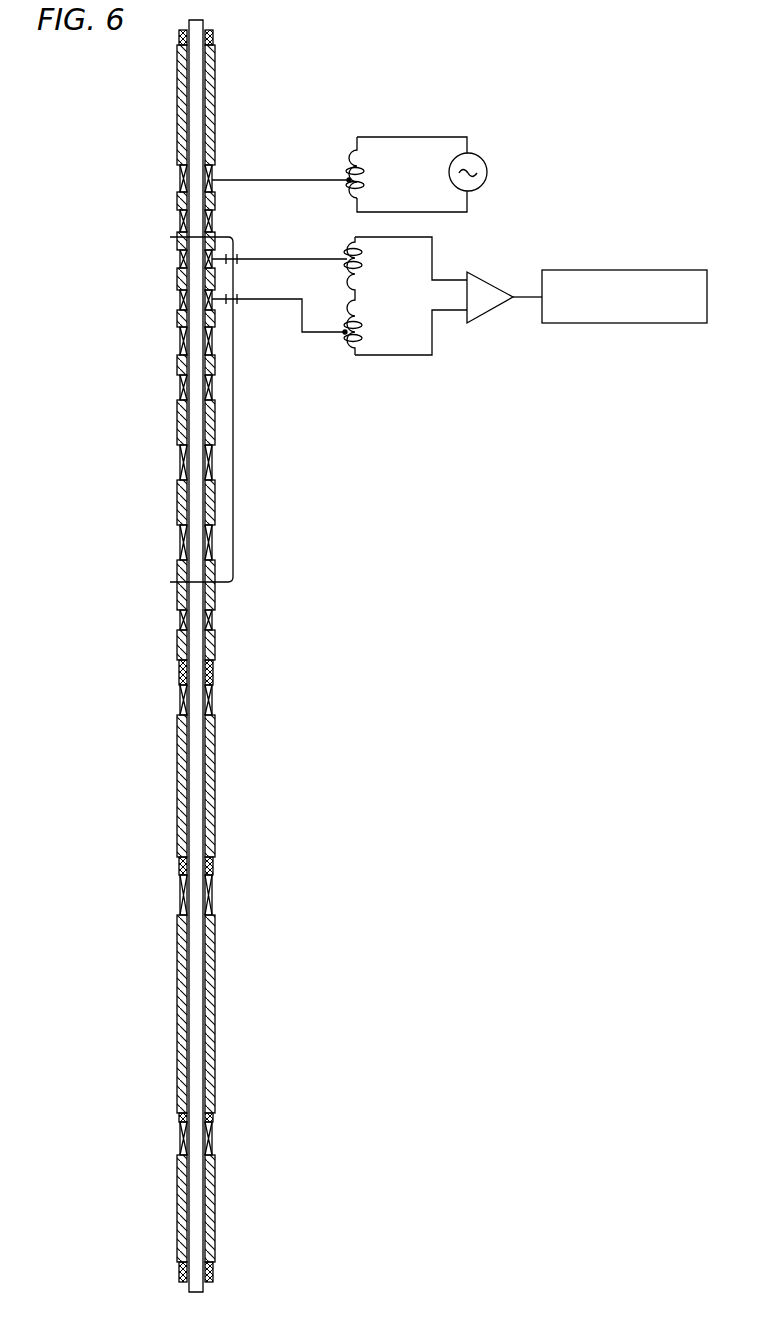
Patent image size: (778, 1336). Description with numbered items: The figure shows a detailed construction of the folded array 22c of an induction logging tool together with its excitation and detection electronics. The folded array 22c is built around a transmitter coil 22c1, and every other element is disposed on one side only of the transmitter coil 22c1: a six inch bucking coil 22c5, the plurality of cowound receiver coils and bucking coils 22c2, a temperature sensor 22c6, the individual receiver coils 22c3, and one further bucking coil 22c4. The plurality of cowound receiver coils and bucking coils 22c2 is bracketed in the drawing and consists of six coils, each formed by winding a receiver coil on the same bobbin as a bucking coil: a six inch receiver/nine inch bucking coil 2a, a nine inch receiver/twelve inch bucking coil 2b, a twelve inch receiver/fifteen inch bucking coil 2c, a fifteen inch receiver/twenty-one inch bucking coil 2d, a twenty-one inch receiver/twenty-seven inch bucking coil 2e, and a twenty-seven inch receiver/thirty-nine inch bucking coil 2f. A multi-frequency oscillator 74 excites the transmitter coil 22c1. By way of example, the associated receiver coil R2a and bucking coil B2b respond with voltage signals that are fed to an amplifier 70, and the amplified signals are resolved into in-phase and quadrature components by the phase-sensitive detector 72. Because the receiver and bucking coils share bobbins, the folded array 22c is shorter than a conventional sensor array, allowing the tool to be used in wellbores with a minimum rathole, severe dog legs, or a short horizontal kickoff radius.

The folded array 22c is at (229, 110).
The transmitter coil 22c1 is at (178, 181).
The 6 inch bucking coil 22c5 is at (178, 222).
The 6 inch receiver/9 inch bucking coil 2a is at (178, 261).
The 9 inch receiver/12 inch bucking coil 2b is at (178, 300).
The 12 inch receiver/15 inch bucking coil 2c is at (178, 340).
The 15 inch receiver/21 inch bucking coil 2d is at (178, 386).
The 21 inch receiver/27 inch bucking coil 2e is at (178, 462).
The 27 inch receiver/39 inch bucking coil 2f is at (178, 545).
The plurality of cowound receiver coils and bucking coils 22c2 is at (233, 463).
The temperature sensor 22c6 is at (178, 622).
The individual receiver coils 22c3 is at (178, 700).
The further bucking coil 22c4 is at (178, 893).
The receiver coil (N-1) R2a is at (287, 257).
The bucking coil (N) B2b is at (308, 333).
The multi-frequency oscillator 74 is at (487, 163).
The amplifier 70 is at (487, 318).
The phase-sensitive detector 72 is at (625, 323).